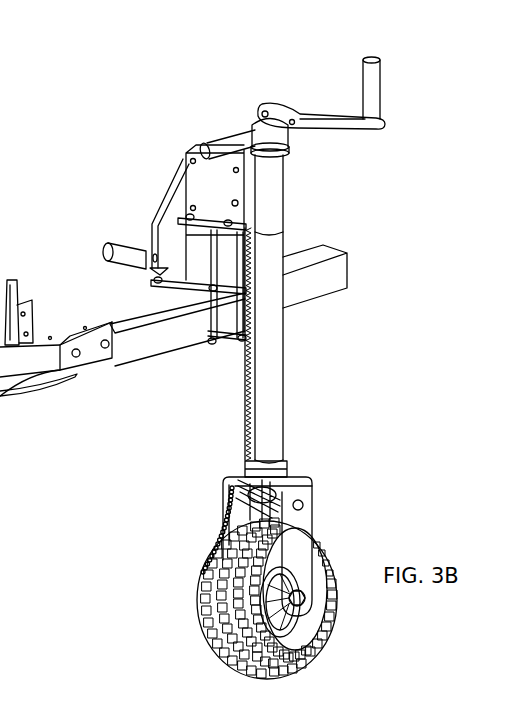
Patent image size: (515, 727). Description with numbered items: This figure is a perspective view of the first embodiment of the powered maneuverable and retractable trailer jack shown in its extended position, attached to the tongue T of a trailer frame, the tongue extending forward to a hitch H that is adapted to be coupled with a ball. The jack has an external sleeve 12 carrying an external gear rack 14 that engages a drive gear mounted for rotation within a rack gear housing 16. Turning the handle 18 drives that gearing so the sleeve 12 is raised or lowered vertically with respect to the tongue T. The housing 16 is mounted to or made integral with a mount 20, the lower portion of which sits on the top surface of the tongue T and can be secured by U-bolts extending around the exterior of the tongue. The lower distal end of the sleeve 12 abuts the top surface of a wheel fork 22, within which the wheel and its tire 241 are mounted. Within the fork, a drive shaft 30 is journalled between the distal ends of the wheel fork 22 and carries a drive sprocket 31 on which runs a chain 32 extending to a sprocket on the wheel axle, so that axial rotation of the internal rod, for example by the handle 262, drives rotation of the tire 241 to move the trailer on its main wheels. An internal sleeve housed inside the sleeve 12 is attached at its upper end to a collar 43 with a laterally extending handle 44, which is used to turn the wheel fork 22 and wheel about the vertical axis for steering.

The external sleeve 12 is at (285, 354).
The external gear rack 14 is at (245, 378).
The rack gear housing 16 is at (200, 178).
The handle 18 is at (170, 196).
The mount 20 is at (152, 275).
The wheel fork 22 is at (0, 244).
The drive shaft 30 is at (228, 481).
The drive sprocket 31 is at (226, 503).
The chain 32 is at (206, 573).
The collar 43 is at (288, 138).
The laterally extending handle 44 is at (226, 145).
The handle 262 is at (352, 137).
The tire 241 is at (396, 645).
The trailer tongue T is at (134, 355).
The hitch H is at (33, 392).